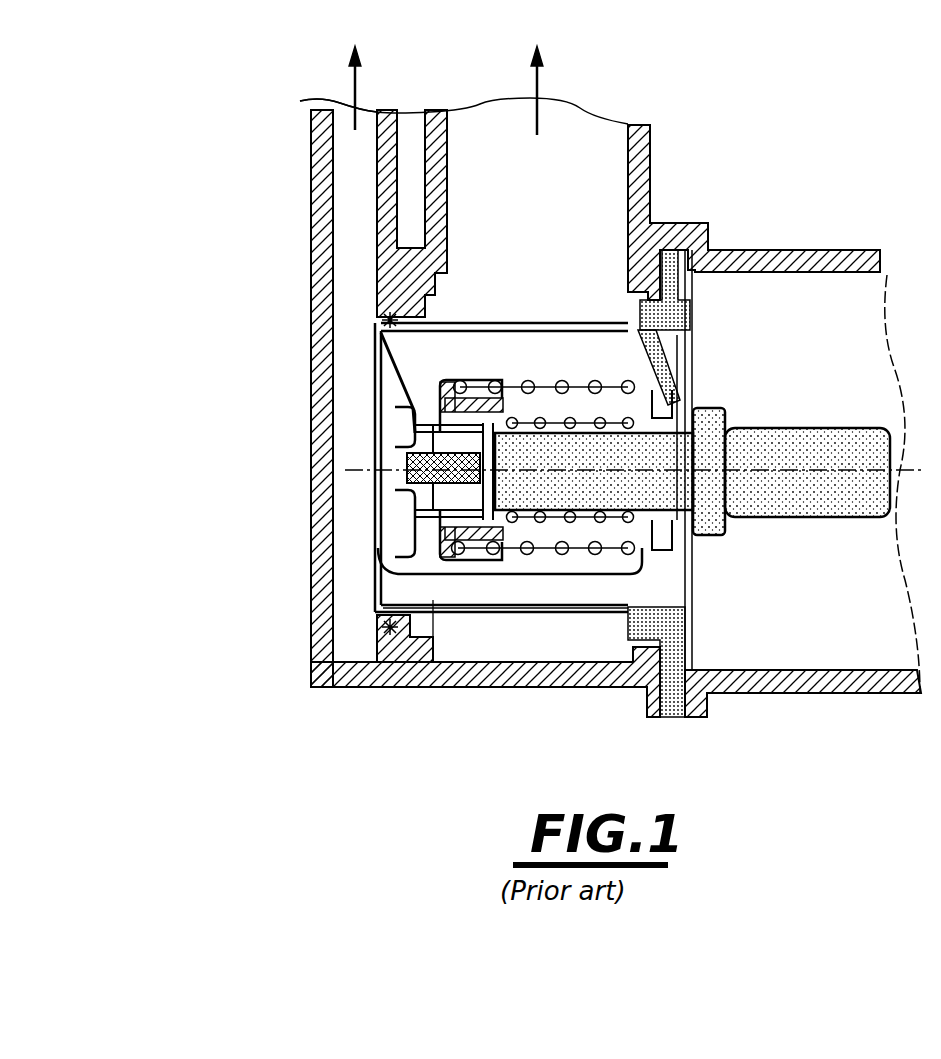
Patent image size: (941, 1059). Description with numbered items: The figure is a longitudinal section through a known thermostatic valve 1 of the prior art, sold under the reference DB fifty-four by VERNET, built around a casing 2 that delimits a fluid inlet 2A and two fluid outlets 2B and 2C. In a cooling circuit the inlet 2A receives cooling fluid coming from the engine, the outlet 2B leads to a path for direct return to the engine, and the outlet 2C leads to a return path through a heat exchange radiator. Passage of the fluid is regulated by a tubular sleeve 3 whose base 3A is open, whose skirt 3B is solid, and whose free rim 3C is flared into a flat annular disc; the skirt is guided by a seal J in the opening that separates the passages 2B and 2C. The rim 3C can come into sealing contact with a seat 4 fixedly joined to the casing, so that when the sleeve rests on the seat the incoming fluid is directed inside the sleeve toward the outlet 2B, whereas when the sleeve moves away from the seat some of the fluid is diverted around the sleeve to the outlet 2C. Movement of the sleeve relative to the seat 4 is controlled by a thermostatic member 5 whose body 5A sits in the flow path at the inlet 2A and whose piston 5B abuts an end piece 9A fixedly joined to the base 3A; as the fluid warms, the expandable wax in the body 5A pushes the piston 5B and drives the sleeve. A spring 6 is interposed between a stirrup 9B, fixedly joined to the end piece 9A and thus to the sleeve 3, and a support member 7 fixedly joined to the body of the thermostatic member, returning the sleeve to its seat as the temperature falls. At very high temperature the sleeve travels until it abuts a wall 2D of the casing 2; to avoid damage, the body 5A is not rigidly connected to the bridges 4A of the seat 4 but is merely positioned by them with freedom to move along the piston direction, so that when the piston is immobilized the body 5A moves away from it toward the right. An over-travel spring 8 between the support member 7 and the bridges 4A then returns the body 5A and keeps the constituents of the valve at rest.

The valve 1 is at (178, 112).
The casing 2 is at (662, 180).
The fluid inlet 2A is at (683, 585).
The fluid outlet 2B is at (355, 180).
The fluid outlet 2C is at (535, 139).
The wall 2D is at (322, 470).
The tubular sleeve 3 is at (519, 614).
The base 3A is at (408, 384).
The skirt 3B is at (586, 613).
The free rim 3C is at (665, 617).
The seat 4 is at (694, 293).
The bridges 4A is at (656, 378).
The thermostatic member 5 is at (789, 419).
The body 5A is at (692, 471).
The piston 5B is at (405, 478).
The spring 6 is at (468, 548).
The support member 7 is at (480, 548).
The over-travel spring 8 is at (567, 423).
The end piece 9A is at (392, 458).
The stirrup 9B is at (393, 500).
The seal J is at (385, 626).